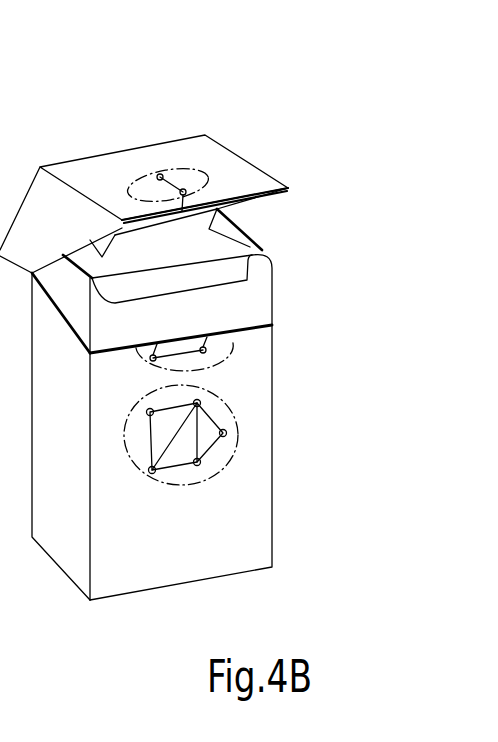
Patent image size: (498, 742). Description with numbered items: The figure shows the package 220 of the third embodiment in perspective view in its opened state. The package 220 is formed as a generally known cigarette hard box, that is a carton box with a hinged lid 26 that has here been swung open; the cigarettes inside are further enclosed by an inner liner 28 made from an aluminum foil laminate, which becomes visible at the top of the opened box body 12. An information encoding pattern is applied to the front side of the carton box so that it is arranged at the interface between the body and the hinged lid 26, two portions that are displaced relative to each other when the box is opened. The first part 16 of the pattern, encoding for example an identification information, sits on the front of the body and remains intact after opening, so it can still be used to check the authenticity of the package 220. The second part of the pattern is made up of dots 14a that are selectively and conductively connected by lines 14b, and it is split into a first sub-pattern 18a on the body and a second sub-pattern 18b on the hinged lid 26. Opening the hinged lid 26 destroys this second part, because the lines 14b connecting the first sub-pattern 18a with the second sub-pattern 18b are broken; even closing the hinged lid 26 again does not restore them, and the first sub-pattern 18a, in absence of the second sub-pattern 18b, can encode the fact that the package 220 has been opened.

The box body 12 is at (228, 377).
The dots 14a is at (188, 194).
The lines 14b is at (194, 198).
The first part of the information encoding pattern 16 is at (230, 462).
The first sub-pattern 18a is at (227, 352).
The second sub-pattern 18b is at (205, 186).
The hinged lid 26 is at (115, 152).
The inner liner 28 is at (212, 266).
The package 220 is at (326, 317).